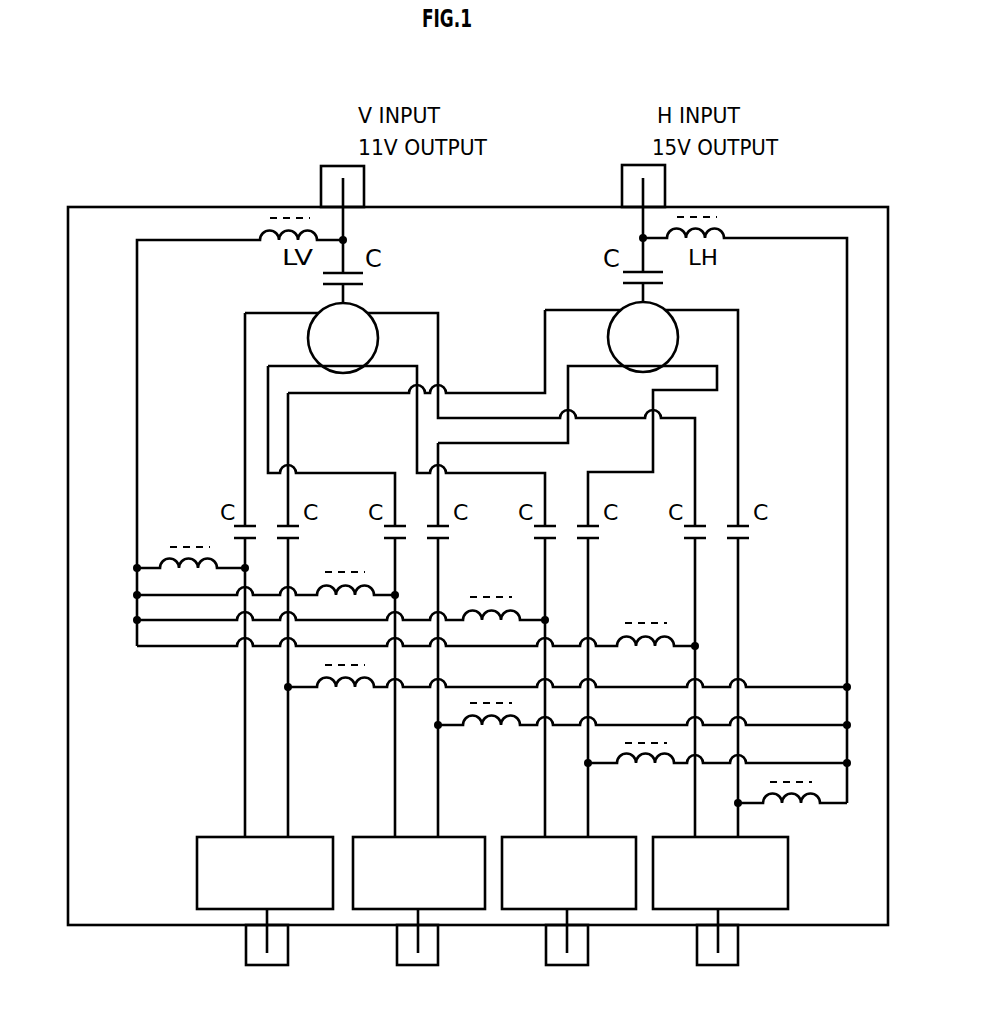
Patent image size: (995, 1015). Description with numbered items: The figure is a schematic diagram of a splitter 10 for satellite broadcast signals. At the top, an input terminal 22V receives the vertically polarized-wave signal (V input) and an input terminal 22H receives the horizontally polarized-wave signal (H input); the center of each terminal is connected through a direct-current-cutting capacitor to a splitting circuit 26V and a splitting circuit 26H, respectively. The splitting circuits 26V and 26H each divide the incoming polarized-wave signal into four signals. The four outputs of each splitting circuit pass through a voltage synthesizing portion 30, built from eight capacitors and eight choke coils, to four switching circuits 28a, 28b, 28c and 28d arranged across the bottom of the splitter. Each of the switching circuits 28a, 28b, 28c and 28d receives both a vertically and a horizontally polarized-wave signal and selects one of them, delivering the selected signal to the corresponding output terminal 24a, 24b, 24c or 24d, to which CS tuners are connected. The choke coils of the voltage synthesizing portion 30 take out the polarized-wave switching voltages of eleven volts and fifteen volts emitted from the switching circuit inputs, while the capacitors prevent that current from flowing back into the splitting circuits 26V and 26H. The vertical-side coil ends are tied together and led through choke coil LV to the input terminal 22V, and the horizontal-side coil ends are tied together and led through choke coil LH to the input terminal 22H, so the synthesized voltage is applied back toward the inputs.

The splitter 10 is at (128, 206).
The input terminal 22V is at (322, 180).
The input terminal 22H is at (620, 180).
The splitting circuit 26V is at (325, 308).
The splitting circuit 26H is at (628, 309).
The switching circuit 28a is at (223, 838).
The switching circuit 28b is at (375, 838).
The switching circuit 28c is at (523, 838).
The switching circuit 28d is at (673, 838).
The output terminal 24a is at (257, 955).
The output terminal 24b is at (409, 955).
The output terminal 24c is at (559, 955).
The output terminal 24d is at (709, 955).
The voltage synthesizing portion 30 is at (240, 687).